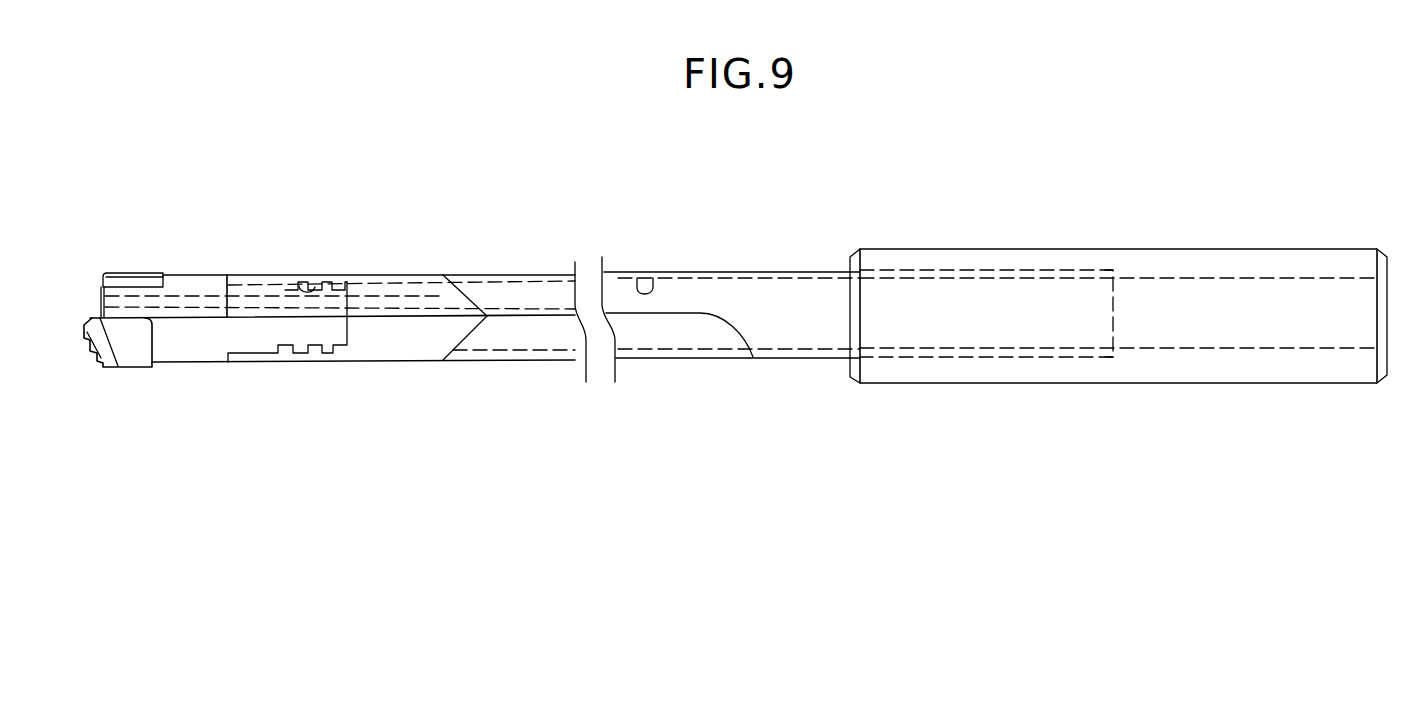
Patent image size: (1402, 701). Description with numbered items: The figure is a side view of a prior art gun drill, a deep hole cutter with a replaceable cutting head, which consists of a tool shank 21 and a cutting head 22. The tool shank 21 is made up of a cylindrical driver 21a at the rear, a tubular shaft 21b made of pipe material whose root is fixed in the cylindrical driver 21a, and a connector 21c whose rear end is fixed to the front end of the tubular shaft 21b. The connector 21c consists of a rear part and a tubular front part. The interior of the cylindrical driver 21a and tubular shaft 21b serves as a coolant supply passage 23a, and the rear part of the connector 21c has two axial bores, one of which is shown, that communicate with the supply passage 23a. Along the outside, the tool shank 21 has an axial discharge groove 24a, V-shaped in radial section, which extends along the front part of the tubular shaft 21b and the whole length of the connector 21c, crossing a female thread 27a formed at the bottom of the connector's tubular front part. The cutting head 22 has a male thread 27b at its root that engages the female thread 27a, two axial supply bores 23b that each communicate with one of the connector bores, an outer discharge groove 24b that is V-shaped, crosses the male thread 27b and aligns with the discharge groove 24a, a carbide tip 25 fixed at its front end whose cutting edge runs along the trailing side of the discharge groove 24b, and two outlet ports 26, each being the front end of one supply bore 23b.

The tool shank 21 is at (688, 262).
The cylindrical driver 21a is at (962, 258).
The tubular shaft 21b is at (792, 272).
The connector 21c is at (362, 282).
The cutting head 22 is at (199, 274).
The coolant supply passage 23a is at (638, 268).
The supply bore 23b is at (180, 305).
The discharge groove 24a is at (558, 322).
The discharge groove 24b is at (210, 340).
The carbide tip 25 is at (132, 345).
The outlet port 26 is at (98, 303).
The female thread 27a is at (297, 278).
The male thread 27b is at (300, 352).